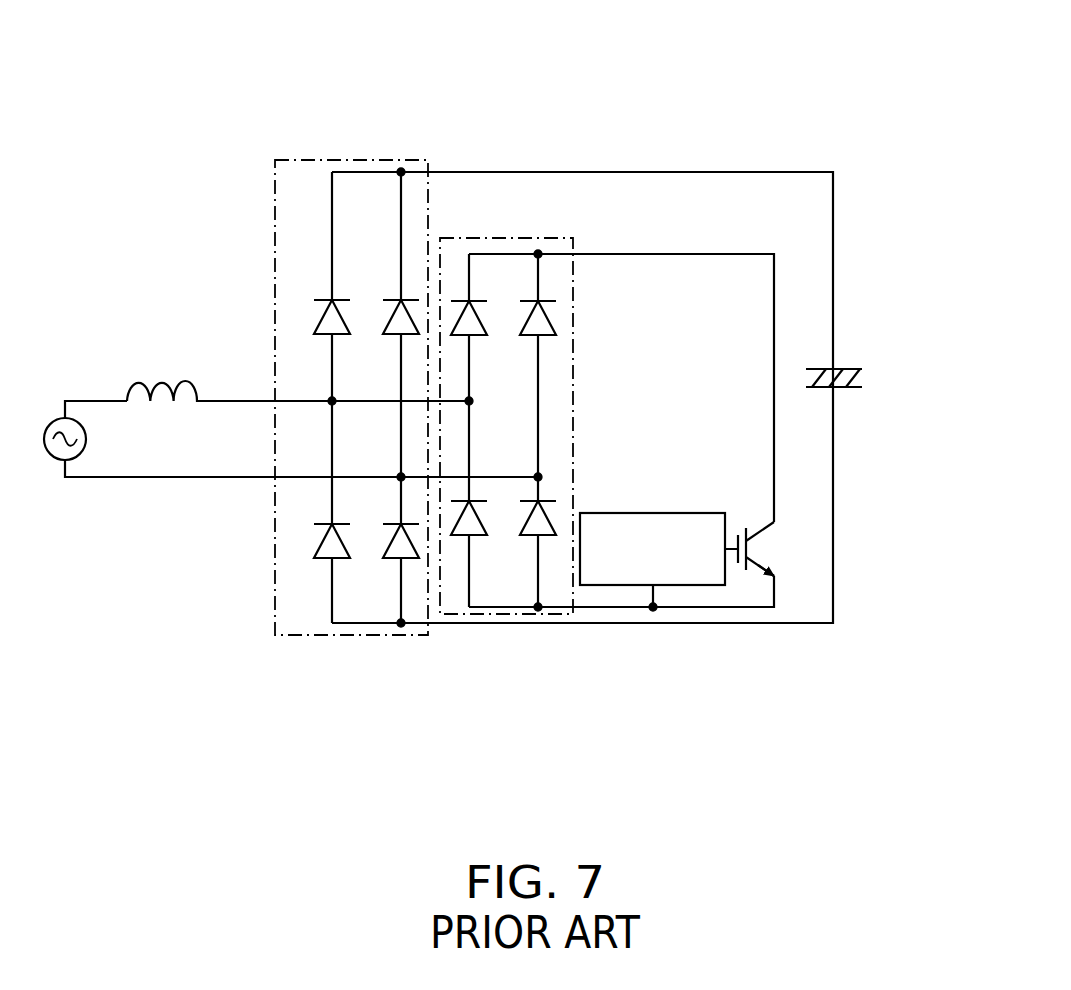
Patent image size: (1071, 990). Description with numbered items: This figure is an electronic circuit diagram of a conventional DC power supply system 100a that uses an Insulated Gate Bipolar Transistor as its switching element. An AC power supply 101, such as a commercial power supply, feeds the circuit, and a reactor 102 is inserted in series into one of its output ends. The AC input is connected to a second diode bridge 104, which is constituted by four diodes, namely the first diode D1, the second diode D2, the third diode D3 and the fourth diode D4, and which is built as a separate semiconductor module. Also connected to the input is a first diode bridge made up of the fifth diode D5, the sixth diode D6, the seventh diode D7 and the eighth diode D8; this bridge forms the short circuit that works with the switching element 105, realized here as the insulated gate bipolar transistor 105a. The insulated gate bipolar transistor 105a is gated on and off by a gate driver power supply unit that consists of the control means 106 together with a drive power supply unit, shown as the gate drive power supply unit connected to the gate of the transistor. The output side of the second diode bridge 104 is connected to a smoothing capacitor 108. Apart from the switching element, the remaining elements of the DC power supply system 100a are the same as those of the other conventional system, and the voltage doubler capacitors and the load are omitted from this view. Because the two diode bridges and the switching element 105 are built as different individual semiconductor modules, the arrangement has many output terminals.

The DC power supply system 100a is at (685, 165).
The AC power supply 101 is at (52, 420).
The reactor 102 is at (163, 380).
The second diode bridge 104 is at (377, 356).
The switching element 105 is at (528, 361).
The Insulated Gate Bipolar Transistor (IGBT) 105a is at (788, 513).
The control means 106 is at (690, 513).
The smoothing capacitor 108 is at (848, 369).
The first diode D1 is at (320, 326).
The second diode D2 is at (388, 326).
The third diode D3 is at (318, 552).
The fourth diode D4 is at (386, 552).
The fifth diode D5 is at (483, 325).
The sixth diode D6 is at (548, 338).
The seventh diode D7 is at (483, 527).
The eighth diode D8 is at (548, 537).